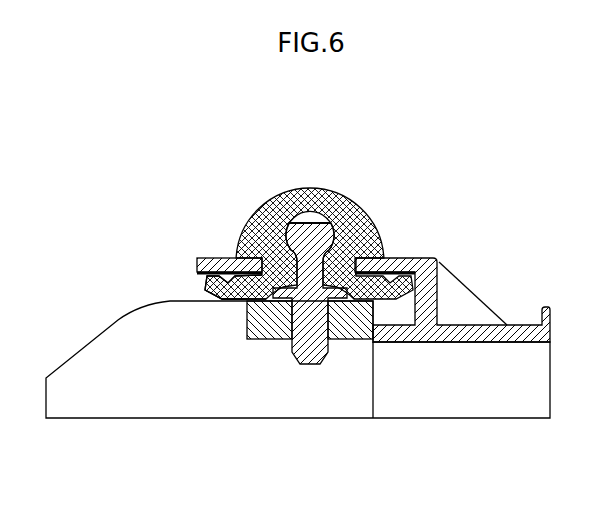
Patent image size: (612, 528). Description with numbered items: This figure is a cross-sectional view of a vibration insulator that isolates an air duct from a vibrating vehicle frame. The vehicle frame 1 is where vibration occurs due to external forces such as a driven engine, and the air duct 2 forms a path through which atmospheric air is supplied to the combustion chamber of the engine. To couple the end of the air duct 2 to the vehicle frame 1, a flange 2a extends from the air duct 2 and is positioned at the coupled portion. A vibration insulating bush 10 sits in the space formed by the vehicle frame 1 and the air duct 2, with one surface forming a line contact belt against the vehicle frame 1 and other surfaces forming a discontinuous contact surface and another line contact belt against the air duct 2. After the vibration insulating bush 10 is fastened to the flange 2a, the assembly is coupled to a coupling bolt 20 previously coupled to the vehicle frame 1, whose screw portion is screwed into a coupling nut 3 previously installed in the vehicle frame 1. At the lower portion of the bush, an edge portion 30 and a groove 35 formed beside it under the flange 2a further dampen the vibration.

The vehicle frame 1 is at (175, 388).
The air duct 2 is at (460, 335).
The flange 2a is at (210, 262).
The coupling nut 3 is at (268, 325).
The vibration insulating bush 10 is at (333, 203).
The coupling bolt 20 is at (313, 347).
The edge portion 30 is at (212, 283).
The groove 35 is at (222, 300).